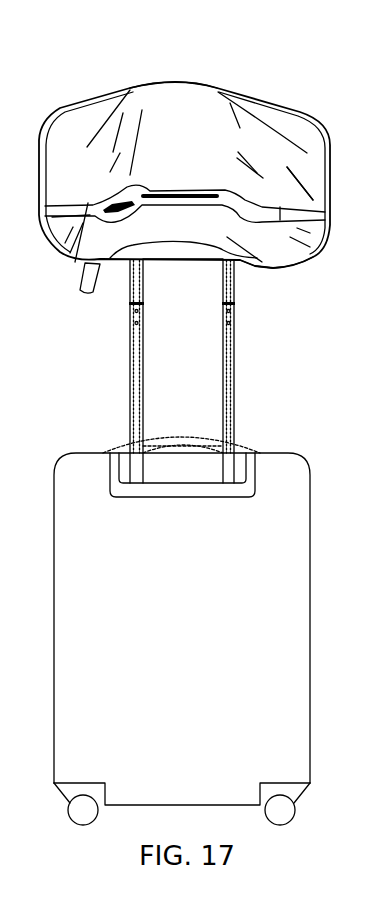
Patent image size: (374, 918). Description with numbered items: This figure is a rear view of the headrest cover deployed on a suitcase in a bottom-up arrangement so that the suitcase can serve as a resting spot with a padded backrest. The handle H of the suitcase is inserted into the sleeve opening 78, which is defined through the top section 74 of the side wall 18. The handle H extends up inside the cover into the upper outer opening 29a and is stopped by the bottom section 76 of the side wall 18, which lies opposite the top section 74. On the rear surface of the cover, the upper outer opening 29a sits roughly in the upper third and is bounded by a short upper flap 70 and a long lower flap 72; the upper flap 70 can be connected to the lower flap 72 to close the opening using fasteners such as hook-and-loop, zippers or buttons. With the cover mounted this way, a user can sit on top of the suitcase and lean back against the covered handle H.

The side wall 18 is at (303, 113).
The bottom section 76 is at (177, 82).
The lower flap 72 is at (315, 172).
The upper outer opening 29a is at (187, 192).
The upper flap 70 is at (318, 246).
The top section 74 is at (262, 266).
The sleeve opening 78 is at (181, 260).
The handle H is at (234, 378).